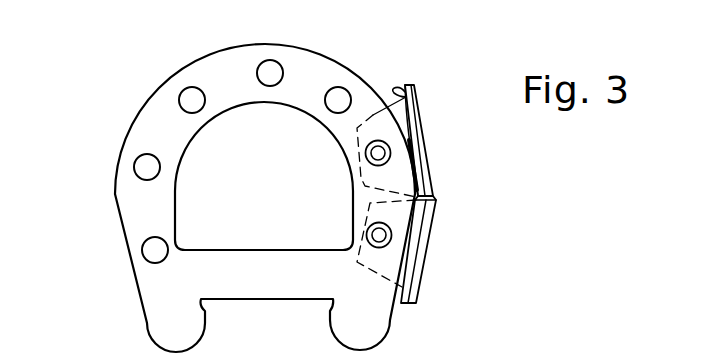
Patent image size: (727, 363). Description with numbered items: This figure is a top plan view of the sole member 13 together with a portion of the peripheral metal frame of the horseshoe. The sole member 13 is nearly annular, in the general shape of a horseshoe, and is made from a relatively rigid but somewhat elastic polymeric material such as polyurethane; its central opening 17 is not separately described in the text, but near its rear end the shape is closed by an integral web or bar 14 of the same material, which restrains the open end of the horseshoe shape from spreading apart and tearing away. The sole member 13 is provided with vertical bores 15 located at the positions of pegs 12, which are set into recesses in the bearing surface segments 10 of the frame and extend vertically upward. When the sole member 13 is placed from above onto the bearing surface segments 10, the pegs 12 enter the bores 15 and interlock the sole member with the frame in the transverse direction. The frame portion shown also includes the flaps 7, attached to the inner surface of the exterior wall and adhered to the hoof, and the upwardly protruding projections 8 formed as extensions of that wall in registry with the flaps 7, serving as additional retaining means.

The sole member 13 is at (157, 108).
The vertical bores 15 is at (271, 67).
The central opening 17 is at (200, 132).
The web or bar 14 is at (261, 285).
The bearing surface segments 10 is at (403, 117).
The flaps or tabs 7 is at (428, 190).
The upwardly protruding projections 8 is at (432, 232).
The pegs 12 is at (387, 239).